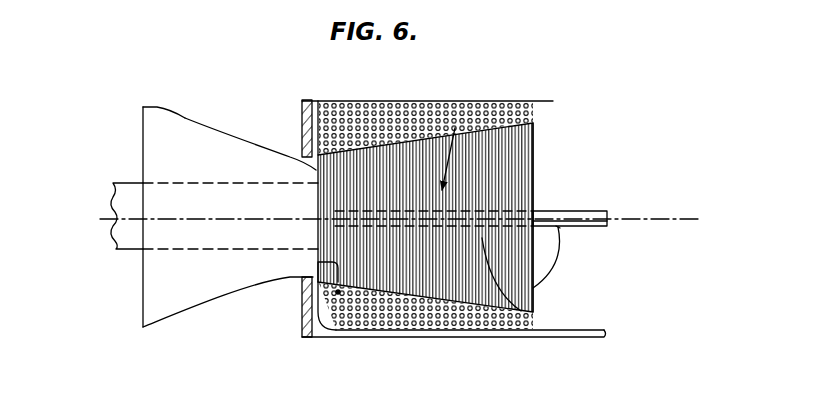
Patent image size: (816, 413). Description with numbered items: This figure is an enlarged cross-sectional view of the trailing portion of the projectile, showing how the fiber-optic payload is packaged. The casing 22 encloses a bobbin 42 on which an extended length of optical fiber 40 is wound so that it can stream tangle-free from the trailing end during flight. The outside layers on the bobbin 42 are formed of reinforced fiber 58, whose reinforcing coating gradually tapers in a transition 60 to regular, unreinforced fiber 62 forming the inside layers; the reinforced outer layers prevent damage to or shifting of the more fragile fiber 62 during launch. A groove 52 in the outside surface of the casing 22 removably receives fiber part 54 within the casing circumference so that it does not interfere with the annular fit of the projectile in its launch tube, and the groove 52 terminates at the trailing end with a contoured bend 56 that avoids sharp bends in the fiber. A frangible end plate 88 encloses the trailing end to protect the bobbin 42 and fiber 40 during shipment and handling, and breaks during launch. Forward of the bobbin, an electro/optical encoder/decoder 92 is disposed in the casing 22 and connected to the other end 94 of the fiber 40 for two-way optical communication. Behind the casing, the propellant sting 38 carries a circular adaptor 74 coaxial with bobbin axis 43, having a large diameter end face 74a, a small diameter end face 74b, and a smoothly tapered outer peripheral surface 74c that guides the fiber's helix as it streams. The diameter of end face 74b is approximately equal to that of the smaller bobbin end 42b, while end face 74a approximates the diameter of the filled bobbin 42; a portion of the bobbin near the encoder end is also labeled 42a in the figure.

The casing 22 is at (521, 100).
The propellant sting 38 is at (135, 182).
The optical fiber 40 is at (368, 100).
The bobbin 42 is at (426, 240).
The housing end wall portion 42a is at (534, 288).
The smaller bobbin end 42b is at (290, 157).
The bobbin axis 43 is at (651, 212).
The groove 52 is at (355, 337).
The fiber part 54 is at (536, 338).
The contoured bend 56 is at (312, 341).
The reinforced fiber 58 is at (454, 190).
The transition 60 is at (440, 199).
The regular fiber 62 is at (537, 168).
The circular adaptor 74 is at (212, 235).
The large diameter end face 74a is at (143, 130).
The small diameter end face 74b is at (338, 292).
The outer peripheral surface 74c is at (192, 310).
The frangible end plate 88 is at (305, 99).
The electro/optical encoder/decoder 92 is at (591, 210).
The other end of fiber 94 is at (562, 229).